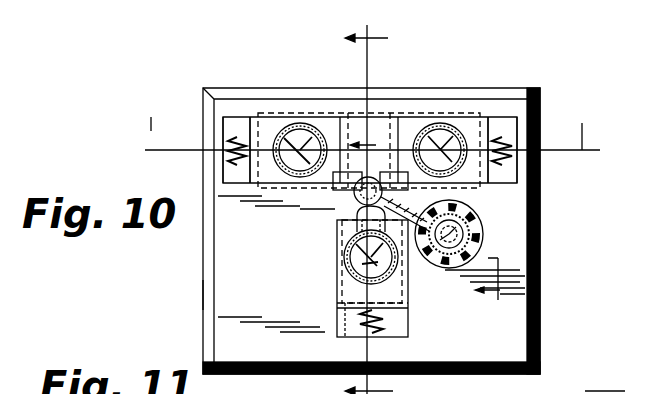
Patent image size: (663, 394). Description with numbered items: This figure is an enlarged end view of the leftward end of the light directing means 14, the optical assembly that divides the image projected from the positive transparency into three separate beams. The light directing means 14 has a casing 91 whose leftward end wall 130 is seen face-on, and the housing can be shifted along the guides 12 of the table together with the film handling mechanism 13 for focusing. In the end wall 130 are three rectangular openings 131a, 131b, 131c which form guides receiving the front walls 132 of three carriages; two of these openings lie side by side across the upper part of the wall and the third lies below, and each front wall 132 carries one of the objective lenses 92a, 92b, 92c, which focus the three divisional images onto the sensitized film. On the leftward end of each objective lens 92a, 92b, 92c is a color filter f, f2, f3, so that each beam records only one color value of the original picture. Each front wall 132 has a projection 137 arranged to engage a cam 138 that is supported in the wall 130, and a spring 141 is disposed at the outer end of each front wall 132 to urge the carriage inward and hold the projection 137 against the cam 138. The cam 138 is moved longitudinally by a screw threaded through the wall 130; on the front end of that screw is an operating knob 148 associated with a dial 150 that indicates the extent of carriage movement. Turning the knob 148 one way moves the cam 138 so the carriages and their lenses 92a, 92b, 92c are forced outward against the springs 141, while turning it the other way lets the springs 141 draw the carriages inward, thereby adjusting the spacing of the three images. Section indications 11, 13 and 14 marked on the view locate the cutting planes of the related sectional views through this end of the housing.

The leftward end wall 130 is at (522, 232).
The rectangular opening 131a is at (503, 128).
The rectangular opening 131b is at (233, 122).
The rectangular opening 131c is at (397, 318).
The front wall 132 is at (268, 128).
The projection 137 is at (333, 195).
The cam 138 is at (447, 212).
The spring 141 is at (235, 167).
The knob 148 is at (483, 220).
The dial 150 is at (482, 237).
The casing 91 is at (204, 293).
The objective lens 92a is at (443, 130).
The objective lens 92b is at (312, 130).
The objective lens 92c is at (395, 276).
The filter f is at (430, 130).
The filter f2 is at (293, 127).
The filter f3 is at (350, 277).
The section line 11- 11 is at (374, 206).
The guide 12 is at (363, 132).
The film handling mechanism 13 is at (426, 220).
The light directing means 14 is at (606, 382).